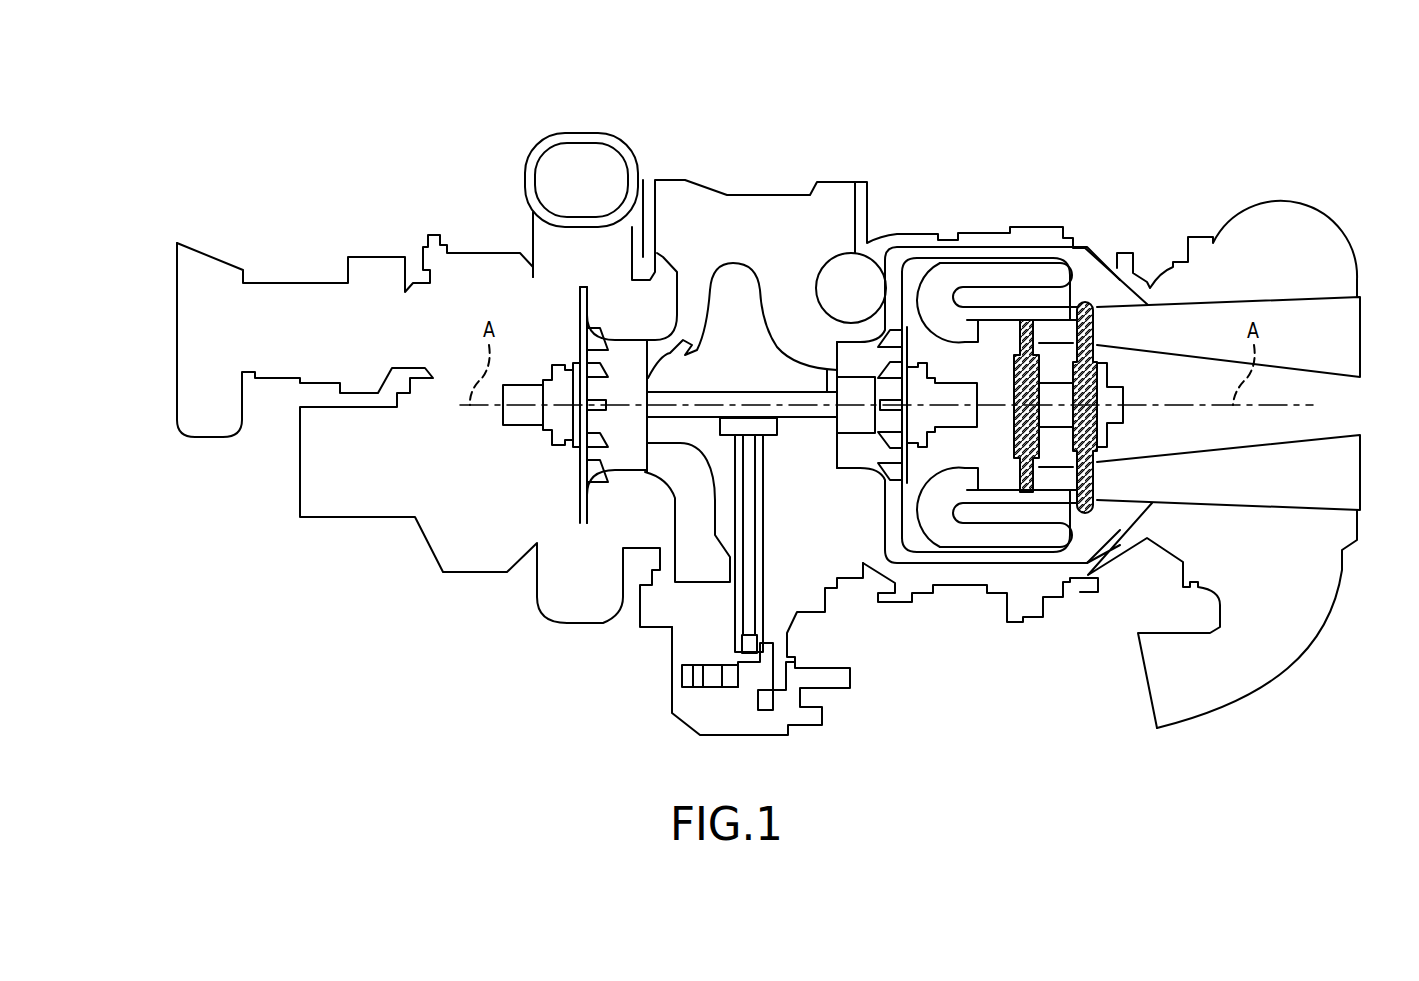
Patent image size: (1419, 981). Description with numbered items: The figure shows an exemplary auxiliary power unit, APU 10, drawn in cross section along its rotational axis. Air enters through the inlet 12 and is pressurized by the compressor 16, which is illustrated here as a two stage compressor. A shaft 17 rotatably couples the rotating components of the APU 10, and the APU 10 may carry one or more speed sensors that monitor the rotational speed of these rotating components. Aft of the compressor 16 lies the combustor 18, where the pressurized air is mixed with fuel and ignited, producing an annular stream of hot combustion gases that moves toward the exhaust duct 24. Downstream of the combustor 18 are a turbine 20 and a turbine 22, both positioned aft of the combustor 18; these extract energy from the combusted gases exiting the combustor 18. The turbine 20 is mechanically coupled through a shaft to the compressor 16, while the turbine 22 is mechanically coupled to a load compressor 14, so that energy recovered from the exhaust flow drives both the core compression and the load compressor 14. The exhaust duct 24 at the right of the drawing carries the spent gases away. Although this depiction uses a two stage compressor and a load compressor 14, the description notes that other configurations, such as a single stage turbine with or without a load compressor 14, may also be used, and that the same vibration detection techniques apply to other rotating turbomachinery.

The APU 10 is at (1133, 115).
The inlet 12 is at (823, 233).
The load compressor 14 is at (585, 472).
The compressor 16 is at (855, 448).
The shaft 17 is at (688, 408).
The combustor 18 is at (990, 533).
The turbine 20 is at (1025, 493).
The turbine 22 is at (1085, 513).
The exhaust duct 24 is at (1302, 330).